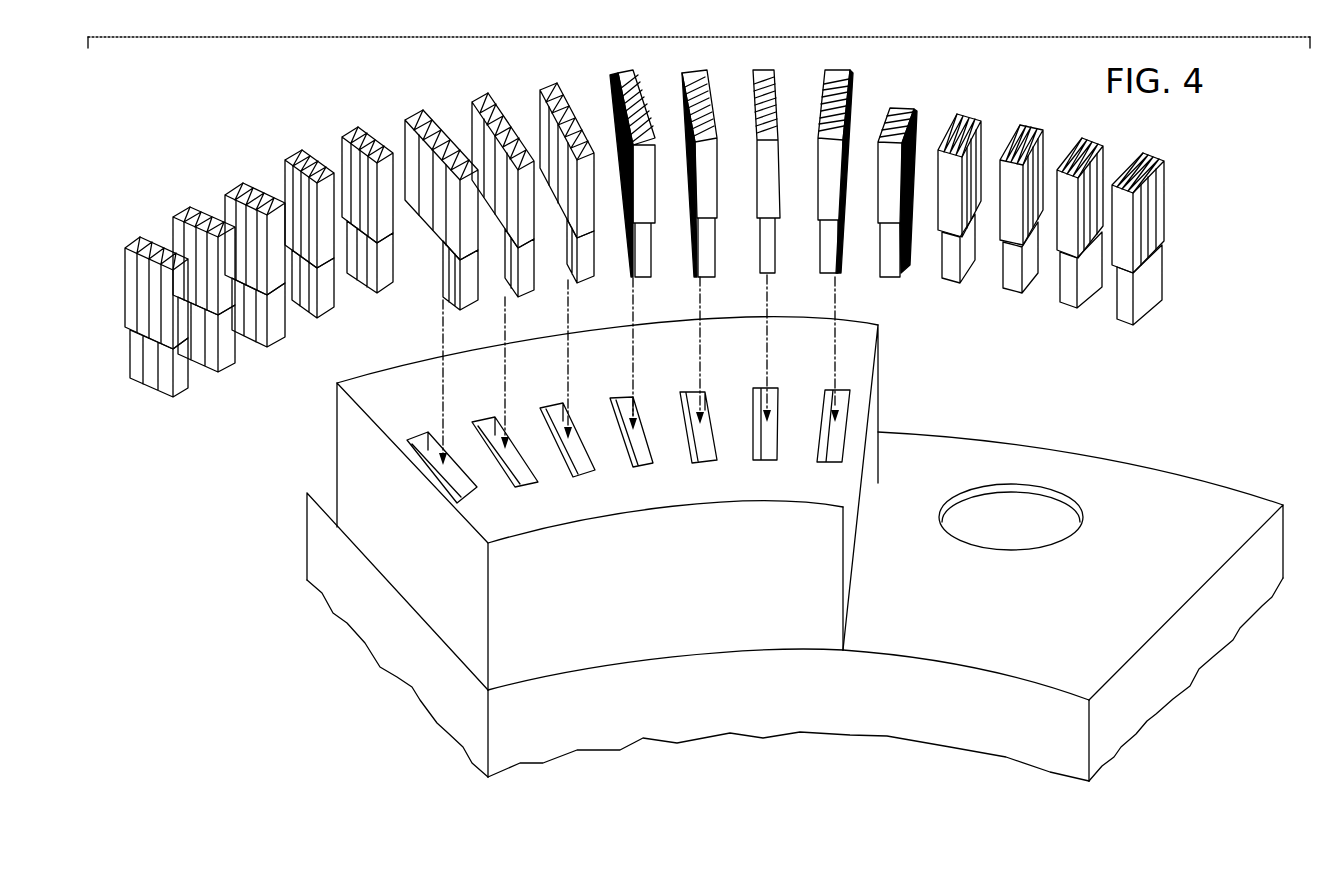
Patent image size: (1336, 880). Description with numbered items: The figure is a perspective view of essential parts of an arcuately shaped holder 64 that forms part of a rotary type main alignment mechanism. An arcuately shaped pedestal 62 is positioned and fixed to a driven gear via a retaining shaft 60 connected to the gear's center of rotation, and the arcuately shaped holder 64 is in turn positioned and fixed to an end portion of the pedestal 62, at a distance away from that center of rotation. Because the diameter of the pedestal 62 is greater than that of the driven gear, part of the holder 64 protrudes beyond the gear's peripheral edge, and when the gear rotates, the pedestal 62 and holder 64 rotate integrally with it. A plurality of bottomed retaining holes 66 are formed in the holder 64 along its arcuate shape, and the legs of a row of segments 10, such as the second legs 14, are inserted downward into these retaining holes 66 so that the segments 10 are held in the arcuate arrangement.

The segment 10 is at (684, 233).
The second leg 14 is at (470, 290).
The retaining shaft 60 is at (1027, 502).
The arcuately shaped pedestal 62 is at (1186, 492).
The arcuately shaped holder 64 is at (778, 630).
The retaining hole 66 is at (458, 490).